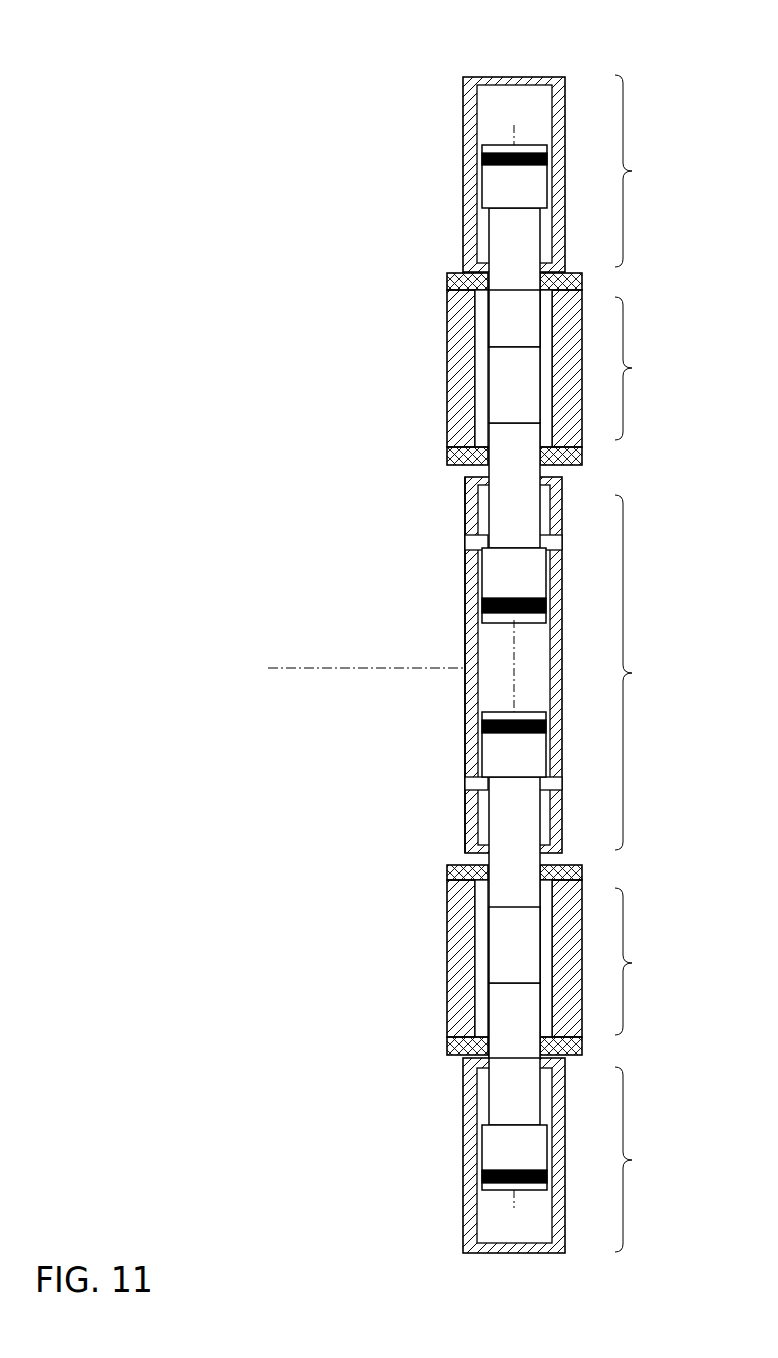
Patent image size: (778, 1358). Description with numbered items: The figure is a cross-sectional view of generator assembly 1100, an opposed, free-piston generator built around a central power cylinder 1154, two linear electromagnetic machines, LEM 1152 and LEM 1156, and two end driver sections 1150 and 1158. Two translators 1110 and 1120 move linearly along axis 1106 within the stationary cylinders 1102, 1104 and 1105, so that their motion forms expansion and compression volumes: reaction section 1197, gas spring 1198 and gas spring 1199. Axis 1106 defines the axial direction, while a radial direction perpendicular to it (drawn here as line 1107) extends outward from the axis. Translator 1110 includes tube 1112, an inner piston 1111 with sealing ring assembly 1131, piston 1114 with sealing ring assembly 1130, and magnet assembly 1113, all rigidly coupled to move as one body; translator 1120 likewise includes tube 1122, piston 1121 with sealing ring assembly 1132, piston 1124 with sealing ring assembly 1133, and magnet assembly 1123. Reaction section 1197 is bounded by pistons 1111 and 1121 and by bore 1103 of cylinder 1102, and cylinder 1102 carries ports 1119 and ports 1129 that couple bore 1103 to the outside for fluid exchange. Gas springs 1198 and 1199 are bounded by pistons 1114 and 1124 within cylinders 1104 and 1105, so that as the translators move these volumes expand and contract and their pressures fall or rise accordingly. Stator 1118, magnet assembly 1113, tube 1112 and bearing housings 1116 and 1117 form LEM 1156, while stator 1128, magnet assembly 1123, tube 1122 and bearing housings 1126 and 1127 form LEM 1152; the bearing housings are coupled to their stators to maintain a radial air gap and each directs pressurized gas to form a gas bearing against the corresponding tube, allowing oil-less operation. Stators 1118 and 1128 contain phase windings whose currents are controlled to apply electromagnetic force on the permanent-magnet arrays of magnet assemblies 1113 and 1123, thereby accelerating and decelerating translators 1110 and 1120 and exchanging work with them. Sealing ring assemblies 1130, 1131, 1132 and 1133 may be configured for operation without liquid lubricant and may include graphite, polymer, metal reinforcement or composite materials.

The generator assembly 1100 is at (88, 57).
The cylinder 1102 is at (452, 583).
The bore 1103 is at (465, 690).
The cylinder 1104 is at (450, 1114).
The cylinder 1105 is at (452, 173).
The axis 1106 is at (514, 650).
The transverse axis 1107 is at (300, 668).
The translator 1110 is at (490, 1005).
The piston 1111 is at (537, 771).
The tube 1112 is at (537, 844).
The magnet assembly 1113 is at (537, 964).
The piston 1114 is at (537, 1159).
The bearing housing 1116 is at (447, 877).
The bearing housing 1117 is at (447, 1048).
The stator 1118 is at (447, 950).
The ports 1119 is at (468, 783).
The translator 1120 is at (490, 330).
The piston 1121 is at (537, 577).
The tube 1122 is at (538, 257).
The magnet assembly 1123 is at (537, 394).
The piston 1124 is at (537, 196).
The bearing housing 1126 is at (447, 460).
The bearing housing 1127 is at (447, 287).
The stator 1128 is at (447, 395).
The ports 1129 is at (468, 543).
The sealing ring assembly 1130 is at (482, 1178).
The sealing ring assembly 1131 is at (482, 735).
The sealing ring assembly 1132 is at (482, 605).
The sealing ring assembly 1133 is at (482, 158).
The driver section 1150 is at (527, 173).
The LEM 1152 is at (511, 364).
The power cylinder 1154 is at (507, 665).
The LEM 1156 is at (515, 960).
The driver section 1158 is at (520, 1155).
The reaction section 1197 is at (537, 697).
The gas spring 1198 is at (540, 1232).
The gas spring 1199 is at (540, 121).